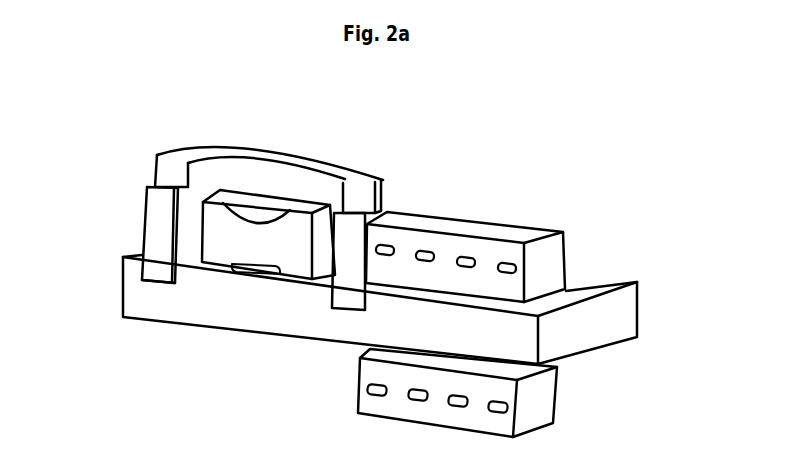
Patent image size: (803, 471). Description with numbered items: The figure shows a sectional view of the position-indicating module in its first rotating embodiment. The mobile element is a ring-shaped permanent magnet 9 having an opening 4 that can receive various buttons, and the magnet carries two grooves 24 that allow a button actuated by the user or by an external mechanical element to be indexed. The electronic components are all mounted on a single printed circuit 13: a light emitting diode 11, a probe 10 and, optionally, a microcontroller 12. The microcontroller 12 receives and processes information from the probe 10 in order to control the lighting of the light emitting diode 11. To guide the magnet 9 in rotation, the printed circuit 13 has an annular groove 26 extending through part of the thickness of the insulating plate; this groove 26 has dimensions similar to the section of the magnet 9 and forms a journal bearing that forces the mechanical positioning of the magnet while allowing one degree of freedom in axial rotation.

The opening 4 is at (247, 166).
The grooves 24 is at (168, 170).
The ring-shaped permanent magnet 9 is at (150, 245).
The annular groove 26 is at (150, 283).
The probe 10 is at (495, 238).
The light emitting diode 11 is at (237, 238).
The microcontroller 12 is at (557, 400).
The printed circuit 13 is at (607, 282).